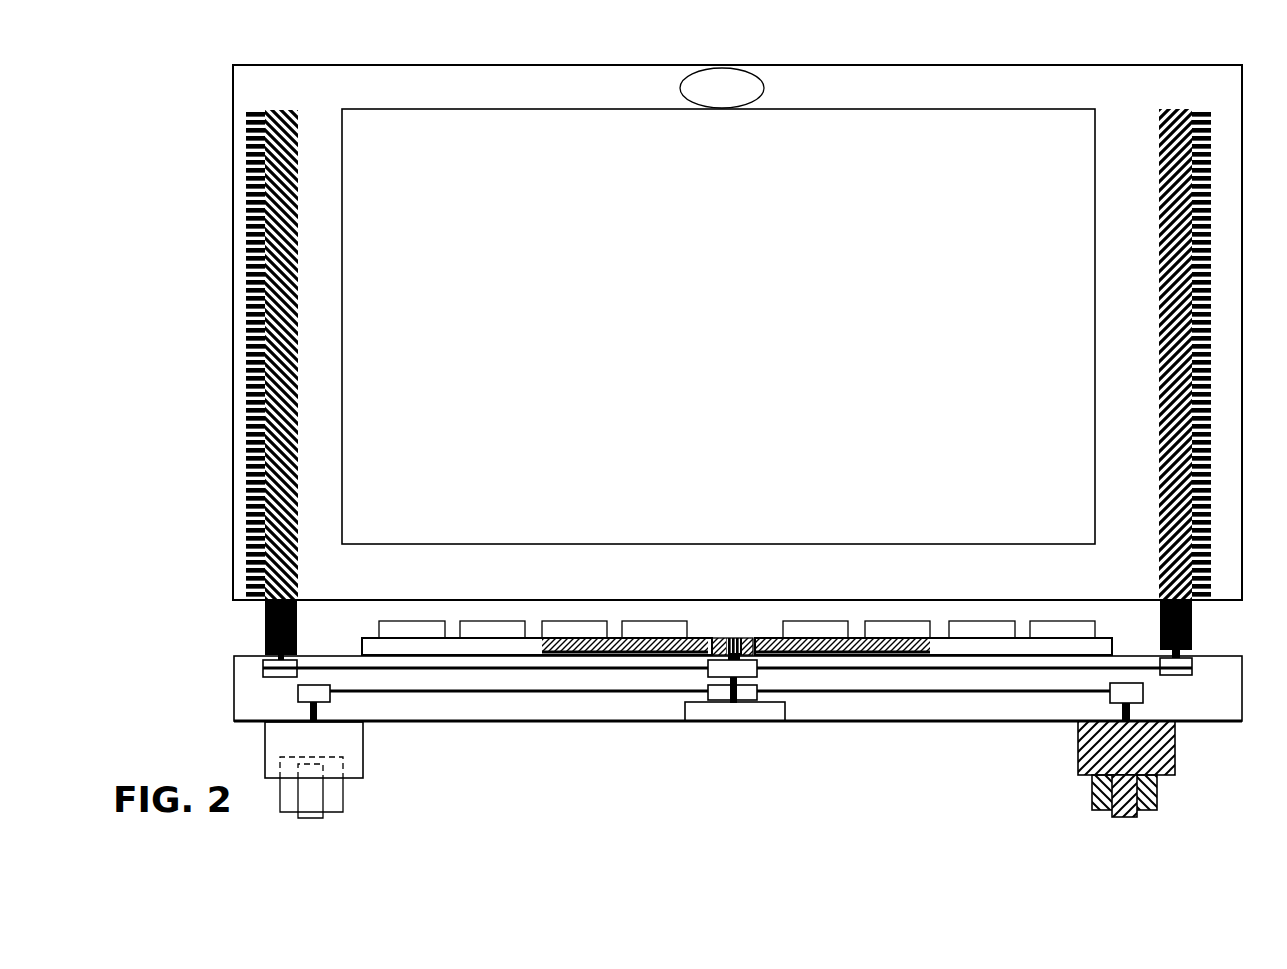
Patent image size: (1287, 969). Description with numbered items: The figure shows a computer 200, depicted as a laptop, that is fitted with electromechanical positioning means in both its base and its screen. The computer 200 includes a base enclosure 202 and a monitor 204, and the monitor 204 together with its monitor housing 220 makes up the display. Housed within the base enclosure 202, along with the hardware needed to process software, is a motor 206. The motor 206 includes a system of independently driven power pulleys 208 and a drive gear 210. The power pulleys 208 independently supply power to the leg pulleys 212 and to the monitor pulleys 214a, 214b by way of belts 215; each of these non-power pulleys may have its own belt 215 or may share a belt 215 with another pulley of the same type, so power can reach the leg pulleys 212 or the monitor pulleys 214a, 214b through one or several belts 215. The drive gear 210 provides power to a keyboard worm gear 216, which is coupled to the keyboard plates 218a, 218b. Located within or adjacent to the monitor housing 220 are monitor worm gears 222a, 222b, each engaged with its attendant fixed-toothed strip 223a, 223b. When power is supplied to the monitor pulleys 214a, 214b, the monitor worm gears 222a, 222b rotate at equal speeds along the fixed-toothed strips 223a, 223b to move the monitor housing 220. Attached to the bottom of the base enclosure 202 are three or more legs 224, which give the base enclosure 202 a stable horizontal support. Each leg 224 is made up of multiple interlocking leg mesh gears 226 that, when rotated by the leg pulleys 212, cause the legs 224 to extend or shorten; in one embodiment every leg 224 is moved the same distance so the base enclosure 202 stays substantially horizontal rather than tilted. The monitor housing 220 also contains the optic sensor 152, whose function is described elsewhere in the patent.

The computer 200 is at (198, 132).
The optic sensor 152 is at (722, 88).
The monitor 204 is at (718, 326).
The monitor housing 220 is at (232, 298).
The fixed-toothed strip 223a is at (262, 94).
The monitor worm gear 222a is at (297, 130).
The monitor worm gear 222b is at (1159, 130).
The fixed-toothed strip 223b is at (1194, 109).
The base enclosure 202 is at (232, 696).
The monitor pulley 214a is at (266, 661).
The monitor pulley 214b is at (1192, 658).
The keyboard plate 218a is at (458, 653).
The keyboard plate 218b is at (997, 637).
The keyboard worm gear 216 is at (850, 637).
The drive gear 210 is at (735, 638).
The belts 215 is at (815, 672).
The power pulleys 208 is at (700, 702).
The motor 206 is at (767, 710).
The leg pulleys 212 is at (1110, 702).
The legs 224 is at (1052, 777).
The leg mesh gears 226 is at (1193, 778).